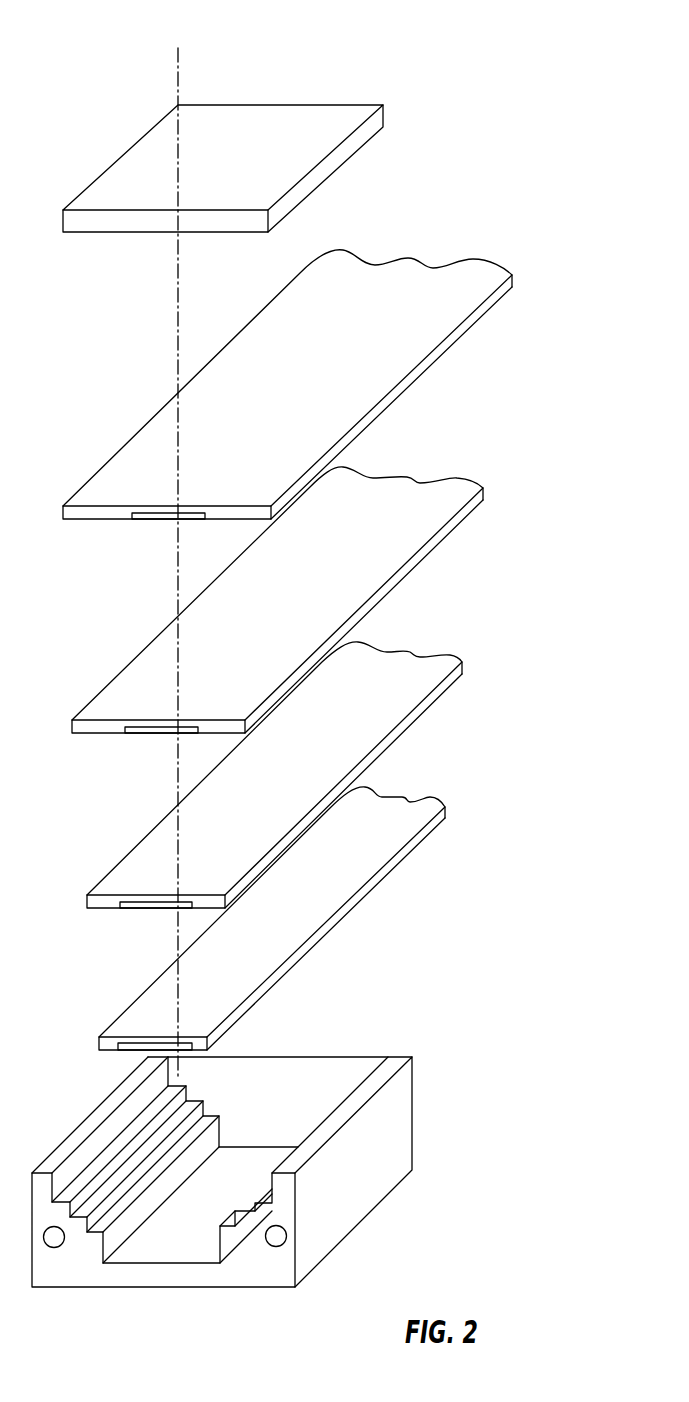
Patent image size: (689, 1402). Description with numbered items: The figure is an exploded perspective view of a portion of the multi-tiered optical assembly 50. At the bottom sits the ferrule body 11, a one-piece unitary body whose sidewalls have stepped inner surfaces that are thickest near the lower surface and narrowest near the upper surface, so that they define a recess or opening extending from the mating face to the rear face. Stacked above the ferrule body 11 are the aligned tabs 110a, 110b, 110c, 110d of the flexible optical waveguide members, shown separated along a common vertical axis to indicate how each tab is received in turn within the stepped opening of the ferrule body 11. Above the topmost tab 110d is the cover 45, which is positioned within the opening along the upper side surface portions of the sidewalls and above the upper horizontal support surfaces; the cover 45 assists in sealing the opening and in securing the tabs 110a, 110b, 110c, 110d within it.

The multi-tiered optical assembly 50 is at (489, 56).
The cover 45 is at (342, 157).
The tab 110d is at (428, 358).
The tab 110c is at (415, 563).
The tab 110b is at (403, 725).
The tab 110a is at (353, 902).
The ferrule body 11 is at (413, 1137).